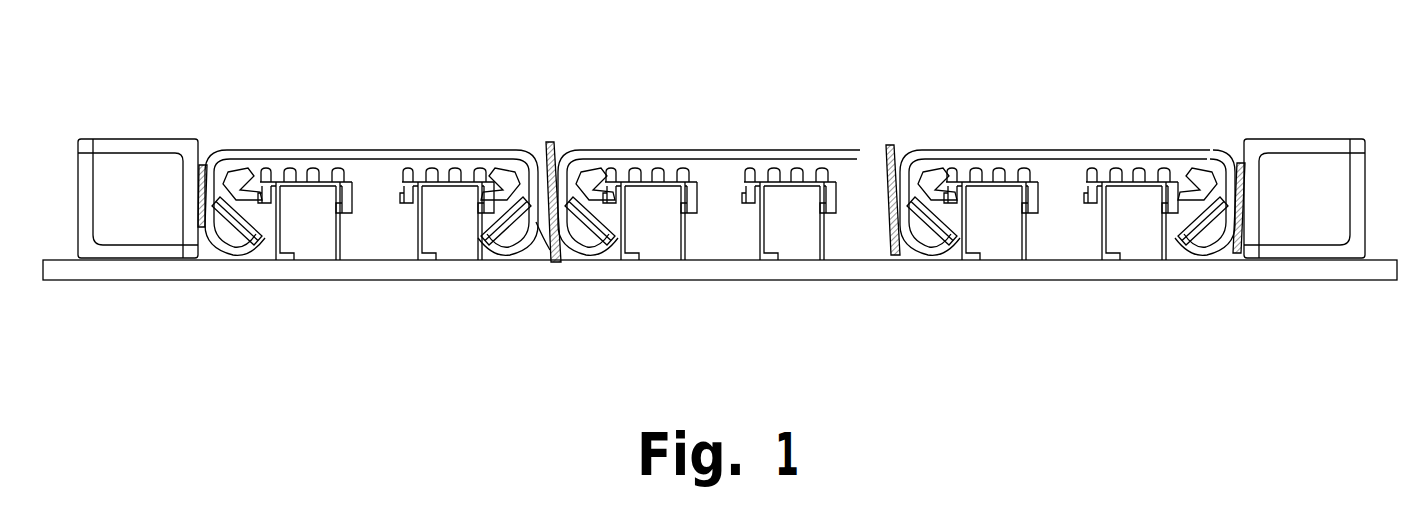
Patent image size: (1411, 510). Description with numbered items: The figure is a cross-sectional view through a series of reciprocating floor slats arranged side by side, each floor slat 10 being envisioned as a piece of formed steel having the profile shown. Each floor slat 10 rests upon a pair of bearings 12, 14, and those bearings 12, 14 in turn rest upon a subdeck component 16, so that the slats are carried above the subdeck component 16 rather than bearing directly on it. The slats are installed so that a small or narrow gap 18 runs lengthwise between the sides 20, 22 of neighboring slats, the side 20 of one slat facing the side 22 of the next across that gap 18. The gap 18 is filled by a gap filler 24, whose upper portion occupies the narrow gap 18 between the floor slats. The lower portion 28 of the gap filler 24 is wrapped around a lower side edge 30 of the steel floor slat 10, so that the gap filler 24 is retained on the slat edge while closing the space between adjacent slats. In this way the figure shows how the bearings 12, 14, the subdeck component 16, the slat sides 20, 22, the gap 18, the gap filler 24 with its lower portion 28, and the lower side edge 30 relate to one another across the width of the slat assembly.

The floor slat 10 is at (808, 194).
The bearing 12 is at (295, 148).
The bearing 14 is at (472, 150).
The subdeck component 16 is at (449, 246).
The gap 18 is at (704, 194).
The side 20 is at (555, 248).
The side 22 is at (560, 150).
The gap filler 24 is at (539, 257).
The lower portion of the gap filler 28 is at (907, 236).
The lower side edge 30 is at (890, 258).